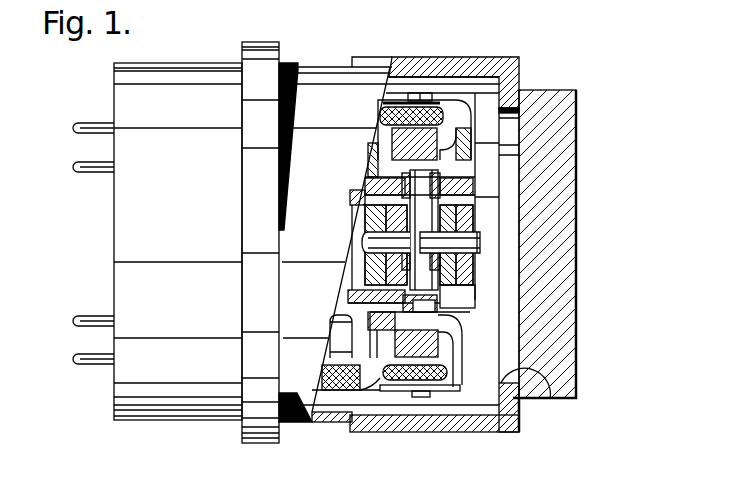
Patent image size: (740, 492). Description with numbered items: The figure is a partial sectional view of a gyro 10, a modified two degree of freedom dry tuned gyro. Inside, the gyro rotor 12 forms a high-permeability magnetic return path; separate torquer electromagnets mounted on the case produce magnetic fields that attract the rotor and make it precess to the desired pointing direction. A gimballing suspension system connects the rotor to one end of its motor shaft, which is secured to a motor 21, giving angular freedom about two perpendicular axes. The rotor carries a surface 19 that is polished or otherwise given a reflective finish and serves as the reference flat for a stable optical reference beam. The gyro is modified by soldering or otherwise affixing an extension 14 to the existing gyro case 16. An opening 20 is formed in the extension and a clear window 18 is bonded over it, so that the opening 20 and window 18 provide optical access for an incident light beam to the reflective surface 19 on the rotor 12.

The gyro 10 is at (624, 35).
The gyro rotor 12 is at (463, 100).
The extension 14 is at (425, 57).
The gyro case 16 is at (317, 66).
The clear window 18 is at (576, 400).
The reflective surface 19 is at (473, 121).
The opening 20 is at (550, 400).
The motor 21 is at (340, 295).